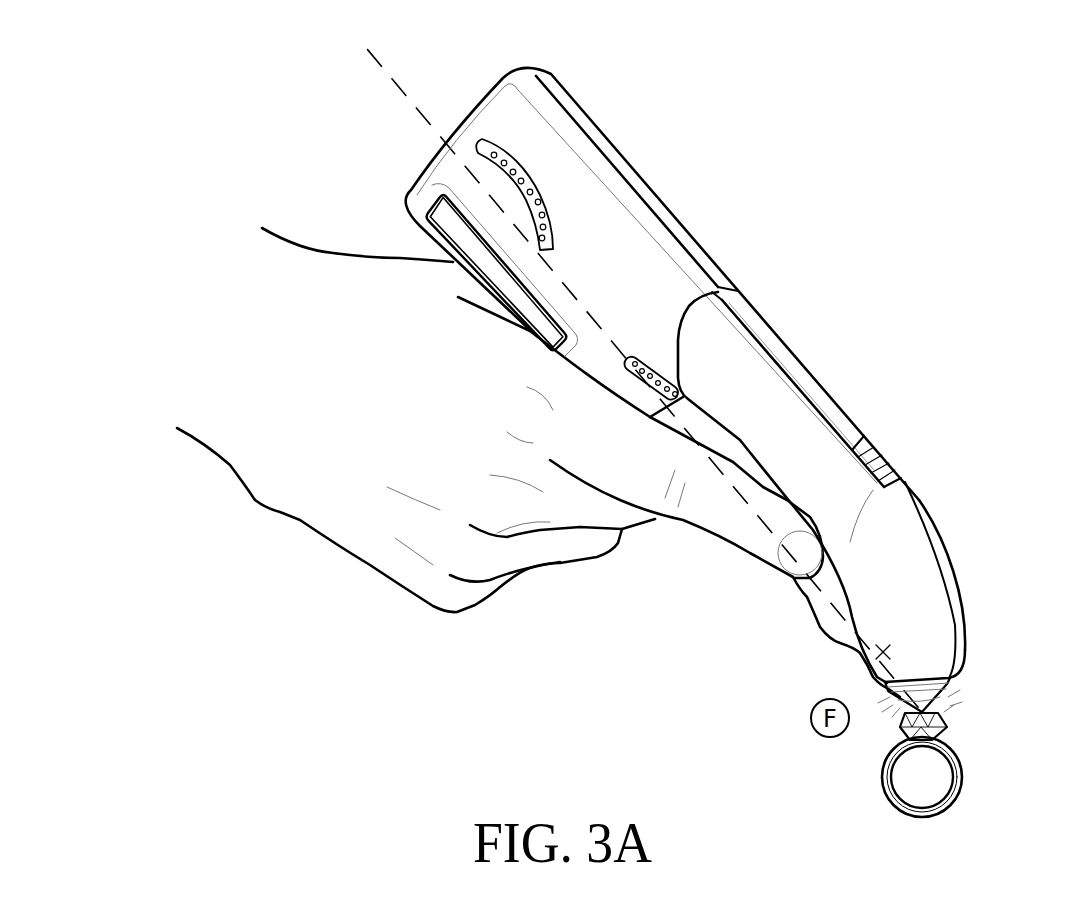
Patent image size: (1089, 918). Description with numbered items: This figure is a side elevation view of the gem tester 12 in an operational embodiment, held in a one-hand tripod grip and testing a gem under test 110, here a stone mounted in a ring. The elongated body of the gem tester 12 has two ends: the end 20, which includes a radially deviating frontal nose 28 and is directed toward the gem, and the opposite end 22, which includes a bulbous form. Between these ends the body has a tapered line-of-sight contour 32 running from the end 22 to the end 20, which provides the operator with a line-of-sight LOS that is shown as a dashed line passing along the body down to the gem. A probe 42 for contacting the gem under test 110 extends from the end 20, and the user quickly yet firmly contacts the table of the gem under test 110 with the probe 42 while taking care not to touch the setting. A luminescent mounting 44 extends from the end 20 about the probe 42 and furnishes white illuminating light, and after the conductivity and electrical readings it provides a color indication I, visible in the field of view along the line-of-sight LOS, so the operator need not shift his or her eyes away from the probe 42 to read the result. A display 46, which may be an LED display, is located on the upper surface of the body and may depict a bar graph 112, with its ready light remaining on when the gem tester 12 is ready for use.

The gem tester 12 is at (609, 140).
The end 20 is at (455, 107).
The end 22 is at (966, 652).
The radially deviating frontal nose 28 is at (960, 568).
The line-of-sight contour 32 is at (885, 650).
The probe 42 is at (903, 705).
The luminescent mounting 44 is at (952, 685).
The display 46 is at (747, 327).
The gem under test 110 is at (945, 727).
The bar graph 112 is at (858, 455).
The line-of-sight LOS is at (617, 368).
The indication I is at (960, 708).